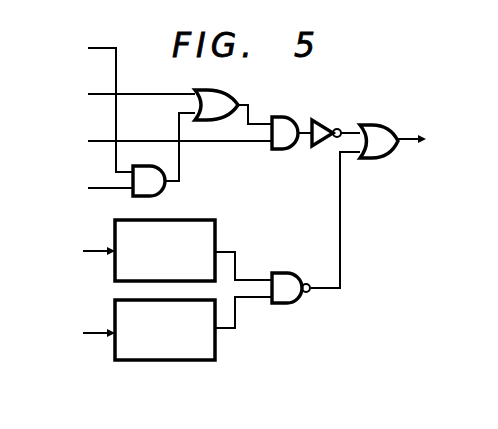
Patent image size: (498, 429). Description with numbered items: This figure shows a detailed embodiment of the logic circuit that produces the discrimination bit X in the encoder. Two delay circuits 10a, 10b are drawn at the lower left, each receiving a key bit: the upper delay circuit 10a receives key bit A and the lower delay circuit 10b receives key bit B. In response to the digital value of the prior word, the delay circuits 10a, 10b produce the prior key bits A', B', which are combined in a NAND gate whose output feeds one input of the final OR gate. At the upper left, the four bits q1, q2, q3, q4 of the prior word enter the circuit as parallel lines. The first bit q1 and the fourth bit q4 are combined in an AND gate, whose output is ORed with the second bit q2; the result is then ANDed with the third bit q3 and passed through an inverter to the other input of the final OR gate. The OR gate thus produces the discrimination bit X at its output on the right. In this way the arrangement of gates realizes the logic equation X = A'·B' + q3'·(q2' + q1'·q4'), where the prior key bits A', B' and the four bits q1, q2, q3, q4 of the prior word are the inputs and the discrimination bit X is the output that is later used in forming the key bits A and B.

The delay circuit 10a is at (202, 219).
The delay circuit 10b is at (186, 361).
The key bit A is at (85, 249).
The key bit B is at (86, 333).
The discrimination bit X is at (423, 140).
The prior key bit A' is at (243, 240).
The prior key bit B' is at (246, 323).
The first bit of word V(n-1) q1 is at (81, 25).
The second bit of word V(n-1) q2 is at (81, 71).
The third bit of word V(n-1) q3 is at (81, 118).
The fourth bit of word V(n-1) q4 is at (81, 165).